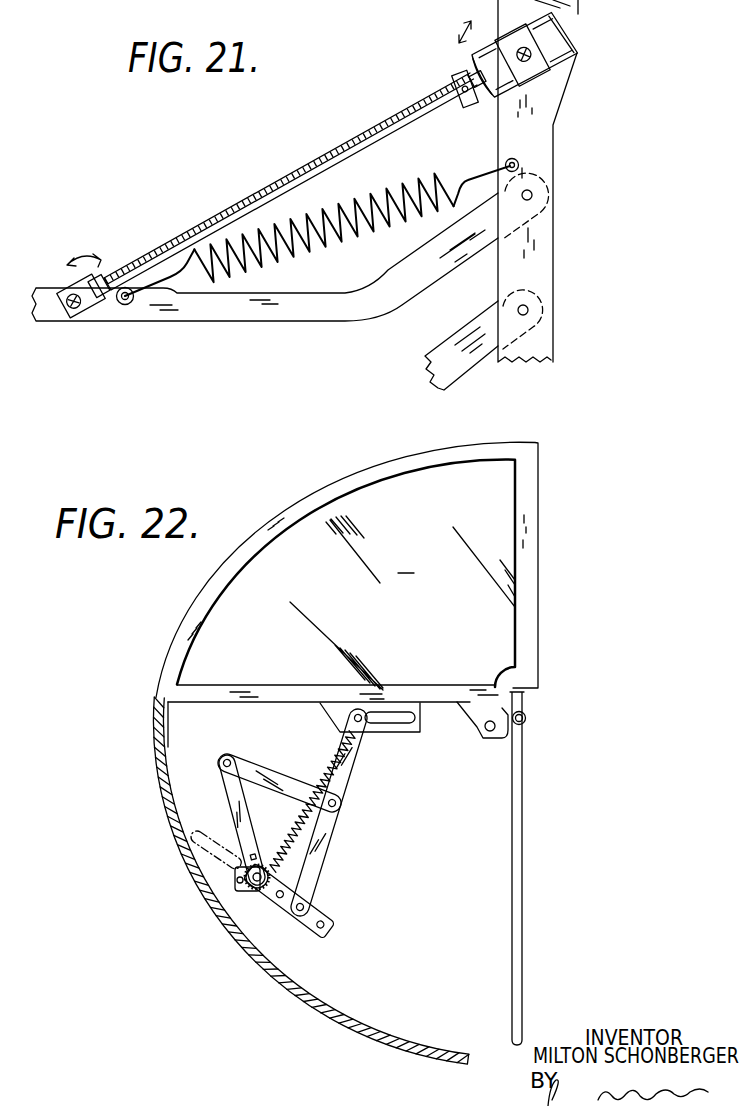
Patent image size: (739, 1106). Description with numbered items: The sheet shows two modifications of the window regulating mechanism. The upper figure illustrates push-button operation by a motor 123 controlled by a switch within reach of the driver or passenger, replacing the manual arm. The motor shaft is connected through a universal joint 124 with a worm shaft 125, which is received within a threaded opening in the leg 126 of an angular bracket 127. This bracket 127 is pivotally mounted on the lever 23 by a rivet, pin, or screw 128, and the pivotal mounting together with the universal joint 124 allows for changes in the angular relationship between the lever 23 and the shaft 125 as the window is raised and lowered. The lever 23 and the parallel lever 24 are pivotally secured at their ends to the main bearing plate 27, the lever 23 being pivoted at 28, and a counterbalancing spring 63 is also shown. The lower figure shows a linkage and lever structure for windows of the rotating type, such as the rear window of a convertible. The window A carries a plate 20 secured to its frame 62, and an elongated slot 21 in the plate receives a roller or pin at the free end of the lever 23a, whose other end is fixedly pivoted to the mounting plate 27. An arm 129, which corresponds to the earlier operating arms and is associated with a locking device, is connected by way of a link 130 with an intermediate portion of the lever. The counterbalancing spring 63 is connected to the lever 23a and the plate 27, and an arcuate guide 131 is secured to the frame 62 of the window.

In FIG. 21, the motor 123 is at (578, 43).
In FIG. 21, the universal joint 124 is at (461, 82).
In FIG. 21, the worm shaft 125 is at (260, 192).
In FIG. 21, the leg 126 is at (86, 271).
In FIG. 21, the angular bracket 127 is at (58, 308).
In FIG. 21, the rivet, pin, or screw 128 is at (74, 309).
In FIG. 21, the counterbalancing spring 63 is at (370, 197).
In FIG. 22, the counterbalancing spring 63 is at (303, 822).
In FIG. 21, the pivot 28 is at (533, 195).
In FIG. 21, the main bearing plate 27 is at (548, 261).
In FIG. 22, the main bearing plate 27 is at (317, 912).
In FIG. 21, the lever 24 is at (437, 357).
In FIG. 21, the lever 23 is at (207, 315).
In FIG. 22, the lever 23a is at (335, 825).
In FIG. 22, the frame 62 is at (423, 687).
In FIG. 22, the plate 20 is at (407, 735).
In FIG. 22, the elongated slot 21 is at (392, 720).
In FIG. 22, the link 130 is at (277, 758).
In FIG. 22, the arm 129 is at (235, 808).
In FIG. 22, the arcuate guide 131 is at (172, 841).
In FIG. 22, the window A is at (406, 562).